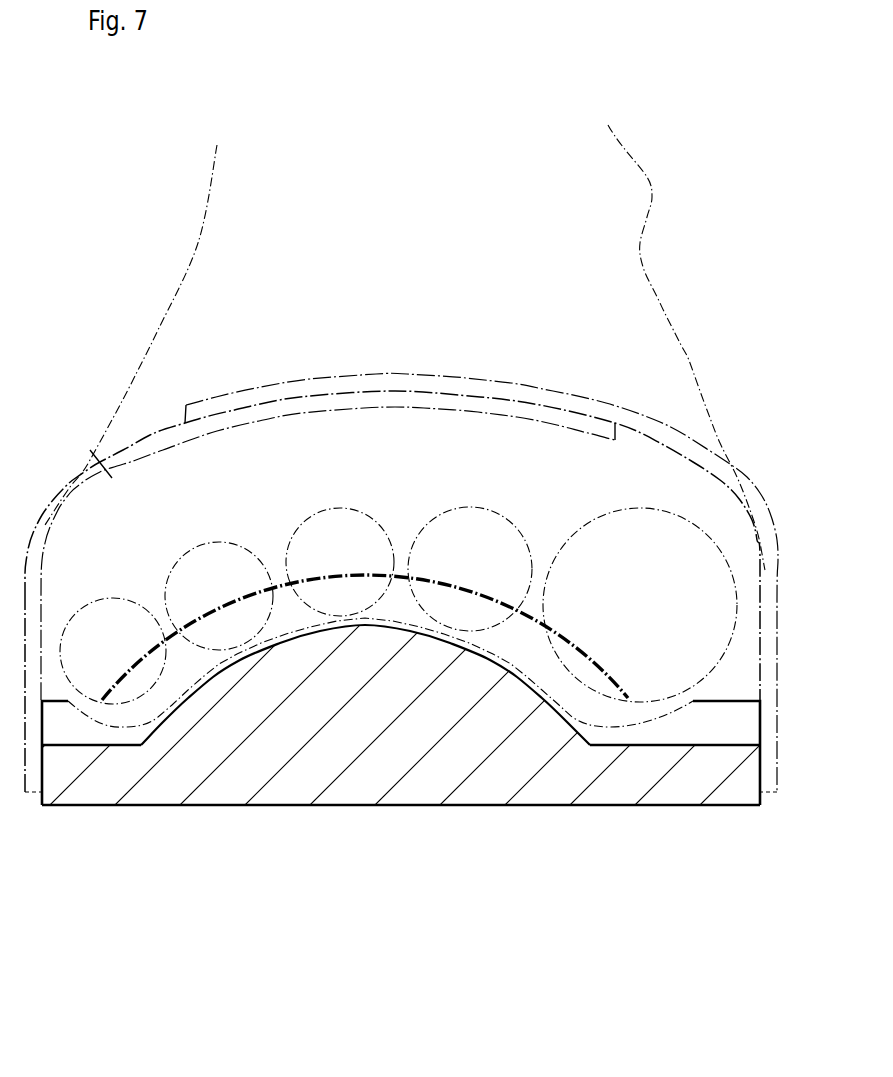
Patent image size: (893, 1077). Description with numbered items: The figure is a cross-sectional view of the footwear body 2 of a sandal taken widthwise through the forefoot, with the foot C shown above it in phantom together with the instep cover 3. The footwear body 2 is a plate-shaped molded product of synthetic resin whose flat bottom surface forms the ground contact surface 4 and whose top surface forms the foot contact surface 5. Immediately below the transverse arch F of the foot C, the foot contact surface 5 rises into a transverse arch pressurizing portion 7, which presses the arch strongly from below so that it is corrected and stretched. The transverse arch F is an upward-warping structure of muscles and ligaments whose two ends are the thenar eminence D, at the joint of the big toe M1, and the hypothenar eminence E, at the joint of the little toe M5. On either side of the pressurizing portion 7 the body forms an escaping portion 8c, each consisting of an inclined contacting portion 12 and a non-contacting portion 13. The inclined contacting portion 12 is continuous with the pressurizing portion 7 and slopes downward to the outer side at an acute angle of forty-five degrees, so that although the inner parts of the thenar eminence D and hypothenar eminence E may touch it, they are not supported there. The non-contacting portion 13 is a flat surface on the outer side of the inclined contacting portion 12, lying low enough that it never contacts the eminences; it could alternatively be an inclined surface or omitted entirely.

The footwear body 2 is at (333, 805).
The instep cover 3 is at (553, 387).
The ground contact surface 4 is at (425, 806).
The foot contact surface 5 is at (700, 685).
The transverse arch pressurizing portion 7 is at (383, 623).
The escaping portion 8c is at (82, 728).
The inclined contacting portion 12 is at (163, 713).
The non-contacting portion 13 is at (82, 728).
The foot C is at (198, 243).
The thenar eminence D is at (625, 727).
The hypothenar eminence E is at (117, 745).
The transverse arch F is at (283, 587).
The big toe M1 is at (667, 508).
The little toe M5 is at (108, 600).